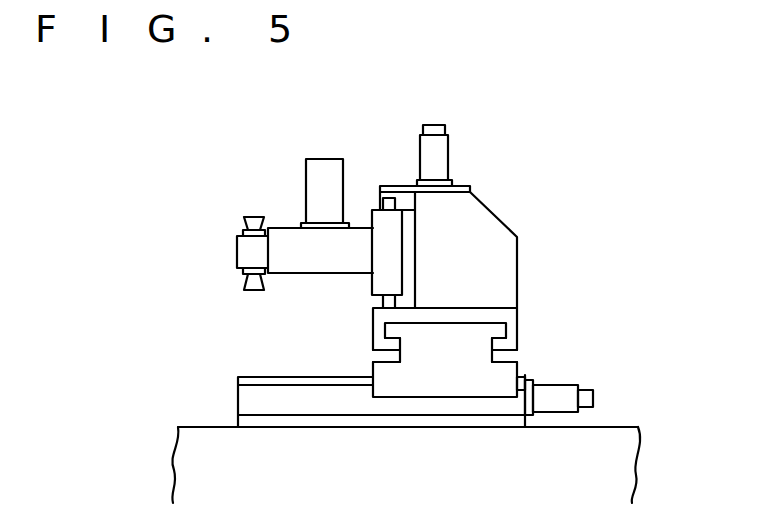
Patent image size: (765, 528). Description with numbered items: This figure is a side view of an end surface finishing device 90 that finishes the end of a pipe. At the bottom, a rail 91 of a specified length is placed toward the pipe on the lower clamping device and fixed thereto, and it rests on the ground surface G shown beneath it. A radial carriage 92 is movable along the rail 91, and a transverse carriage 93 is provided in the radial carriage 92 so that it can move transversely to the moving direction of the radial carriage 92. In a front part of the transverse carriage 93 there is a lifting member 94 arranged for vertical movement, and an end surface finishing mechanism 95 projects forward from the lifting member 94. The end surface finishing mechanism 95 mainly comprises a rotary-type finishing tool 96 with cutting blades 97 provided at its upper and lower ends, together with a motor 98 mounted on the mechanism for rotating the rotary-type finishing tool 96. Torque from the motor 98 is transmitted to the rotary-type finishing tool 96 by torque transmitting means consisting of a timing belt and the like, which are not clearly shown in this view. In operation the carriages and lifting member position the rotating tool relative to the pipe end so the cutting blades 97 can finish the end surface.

The end surface finishing device 90 is at (690, 122).
The rail 91 is at (243, 376).
The radial carriage 92 is at (518, 364).
The transverse carriage 93 is at (518, 277).
The lifting member 94 is at (372, 285).
The end surface finishing mechanism 95 is at (288, 214).
The rotary-type finishing tool 96 is at (237, 256).
The cutting blades 97 is at (245, 214).
The motor 98 is at (323, 158).
The ground / floor G is at (625, 427).